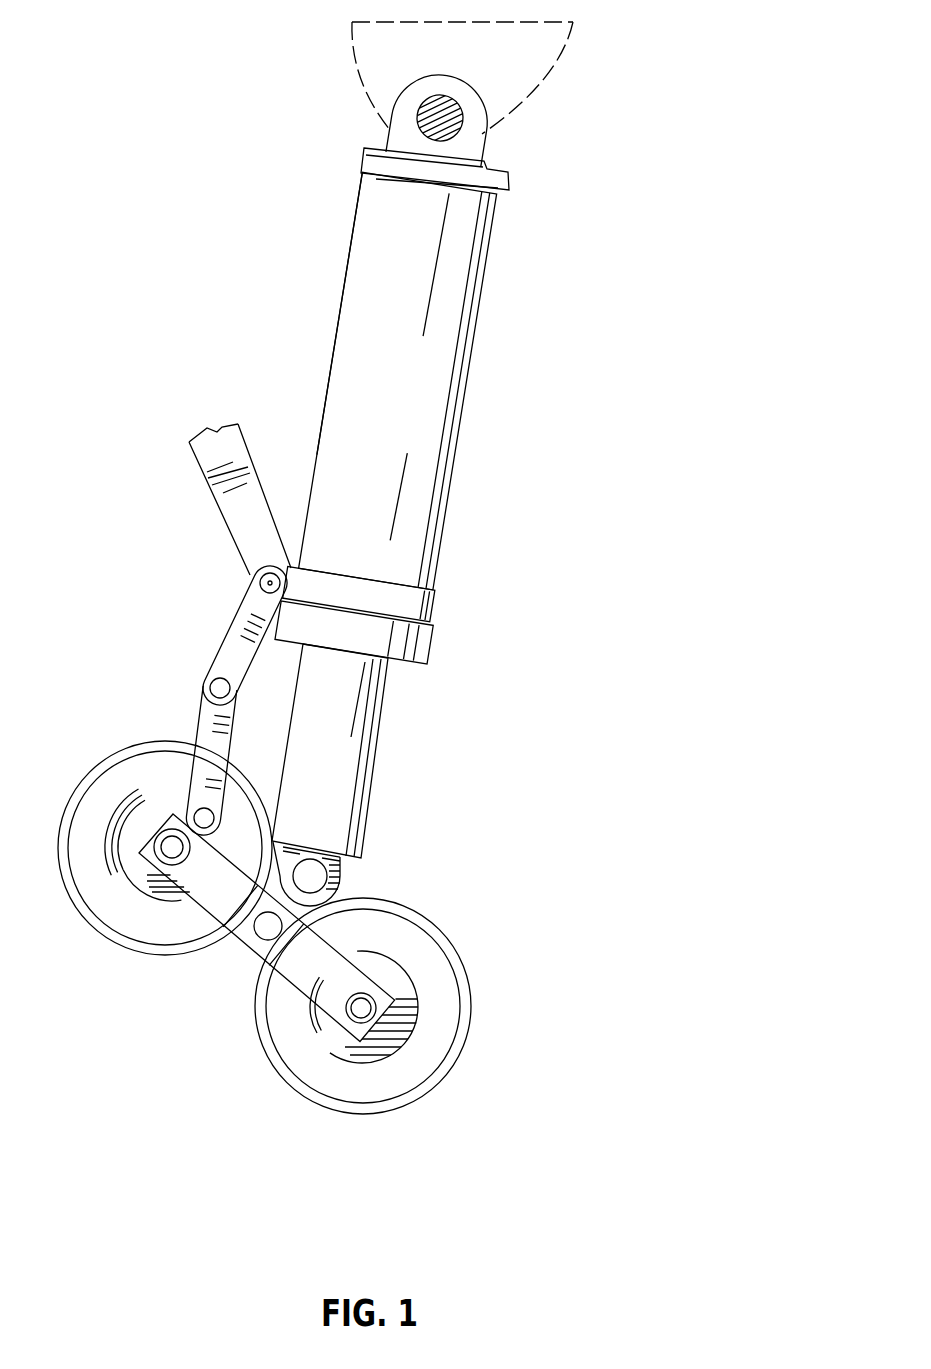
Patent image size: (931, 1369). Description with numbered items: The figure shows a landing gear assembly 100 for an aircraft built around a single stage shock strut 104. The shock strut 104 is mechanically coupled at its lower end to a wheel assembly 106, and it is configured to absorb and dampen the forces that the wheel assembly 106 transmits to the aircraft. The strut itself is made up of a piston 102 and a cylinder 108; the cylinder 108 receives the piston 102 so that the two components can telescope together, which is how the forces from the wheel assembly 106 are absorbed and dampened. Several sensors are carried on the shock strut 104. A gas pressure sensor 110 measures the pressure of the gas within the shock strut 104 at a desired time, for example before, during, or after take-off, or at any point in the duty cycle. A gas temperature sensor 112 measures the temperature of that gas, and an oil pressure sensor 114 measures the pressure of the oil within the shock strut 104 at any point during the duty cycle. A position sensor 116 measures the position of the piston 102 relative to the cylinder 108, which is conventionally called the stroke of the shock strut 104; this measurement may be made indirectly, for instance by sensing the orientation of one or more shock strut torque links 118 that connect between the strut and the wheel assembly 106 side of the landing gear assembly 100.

The landing gear assembly 100 is at (417, 568).
The piston 102 is at (373, 803).
The shock strut 104 is at (488, 278).
The wheel assembly 106 is at (460, 953).
The cylinder 108 is at (417, 472).
The gas pressure sensor 110 is at (358, 207).
The gas temperature sensor 112 is at (370, 265).
The oil pressure sensor 114 is at (352, 340).
The position sensor 116 is at (394, 664).
The shock strut torque links 118 is at (205, 683).